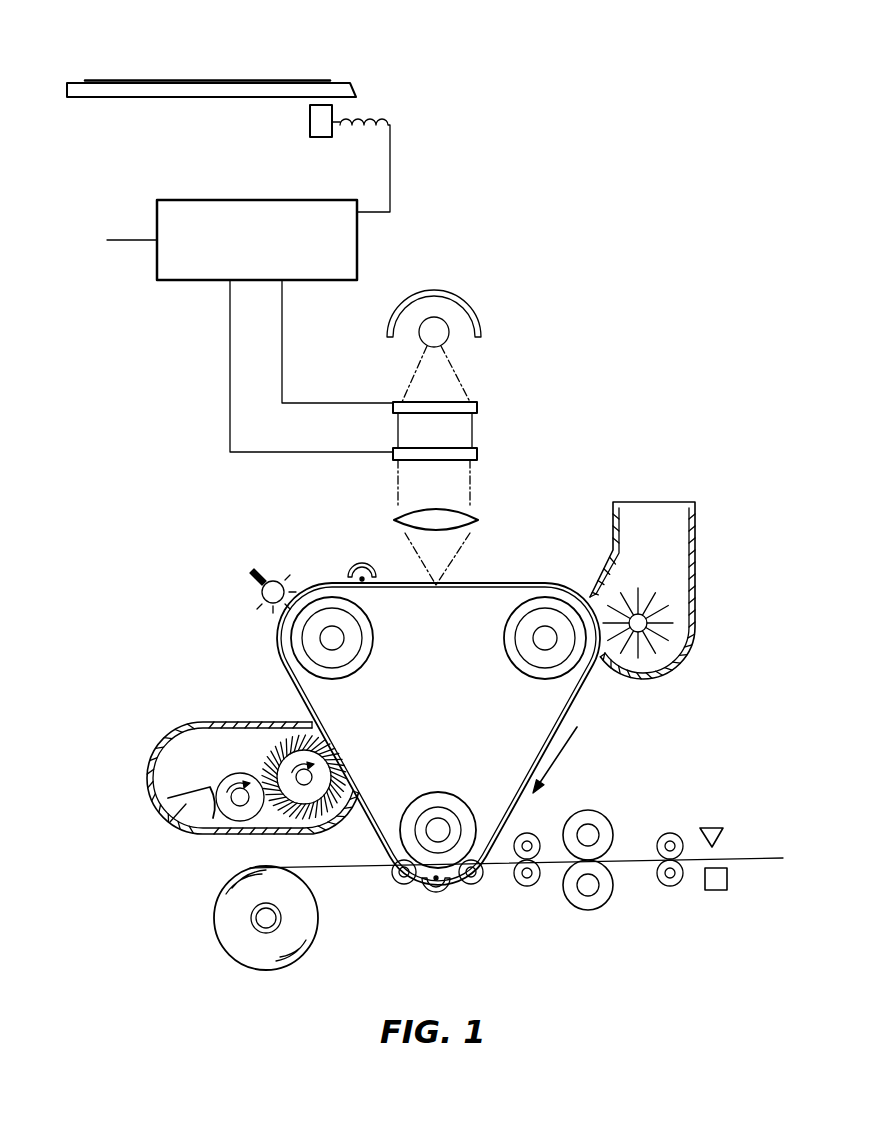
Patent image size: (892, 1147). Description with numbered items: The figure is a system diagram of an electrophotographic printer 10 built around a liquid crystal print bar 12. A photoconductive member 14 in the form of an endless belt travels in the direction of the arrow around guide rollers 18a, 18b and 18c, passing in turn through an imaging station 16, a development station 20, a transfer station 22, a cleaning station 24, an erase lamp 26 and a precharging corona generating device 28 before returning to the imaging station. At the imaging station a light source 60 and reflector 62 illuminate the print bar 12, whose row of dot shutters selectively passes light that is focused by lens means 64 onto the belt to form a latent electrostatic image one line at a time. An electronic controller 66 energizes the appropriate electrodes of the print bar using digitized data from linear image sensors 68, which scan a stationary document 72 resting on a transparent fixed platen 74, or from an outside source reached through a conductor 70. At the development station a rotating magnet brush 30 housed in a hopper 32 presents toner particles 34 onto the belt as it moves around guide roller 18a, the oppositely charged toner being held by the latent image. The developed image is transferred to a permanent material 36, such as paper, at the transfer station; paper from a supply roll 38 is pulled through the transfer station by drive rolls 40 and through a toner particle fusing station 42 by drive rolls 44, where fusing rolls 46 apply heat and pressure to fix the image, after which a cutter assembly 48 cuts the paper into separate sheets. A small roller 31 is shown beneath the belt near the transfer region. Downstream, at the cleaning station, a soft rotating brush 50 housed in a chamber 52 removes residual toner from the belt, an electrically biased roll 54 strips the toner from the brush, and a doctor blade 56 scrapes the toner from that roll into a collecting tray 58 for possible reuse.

The electrophotographic printer 10 is at (505, 292).
The liquid crystal print bar 12 is at (500, 390).
The photoconductive member 14 is at (535, 745).
The imaging station 16 is at (487, 488).
The guide roller 18a is at (512, 660).
The guide roller 18b is at (445, 792).
The guide roller 18c is at (375, 655).
The development station 20 is at (720, 585).
The transfer station 22 is at (442, 903).
The cleaning station 24 is at (146, 744).
The erase lamp 26 is at (262, 598).
The precharging corona generating device 28 is at (356, 560).
The rotating magnet brush 30 is at (638, 586).
The guide roller 31 is at (392, 880).
The hopper 32 is at (677, 502).
The toner particles 34 is at (680, 665).
The permanent material 36 is at (428, 888).
The supply roll 38 is at (222, 893).
The drive rolls 40 is at (520, 880).
The toner particle fusing station 42 is at (600, 917).
The drive rolls 44 is at (678, 833).
The fusing rolls 46 is at (580, 900).
The cutter assembly 48 is at (739, 834).
The soft rotating brush 50 is at (270, 743).
The chamber 52 is at (220, 722).
The electrically biased roll 54 is at (237, 774).
The doctor blade 56 is at (208, 787).
The collecting tray 58 is at (170, 822).
The light source 60 is at (420, 340).
The reflector 62 is at (455, 298).
The lens means 64 is at (478, 520).
The electronic controller 66 is at (330, 200).
The linear image sensors 68 is at (310, 120).
The conductor 70 is at (133, 240).
The document 72 is at (250, 83).
The platen 74 is at (352, 92).